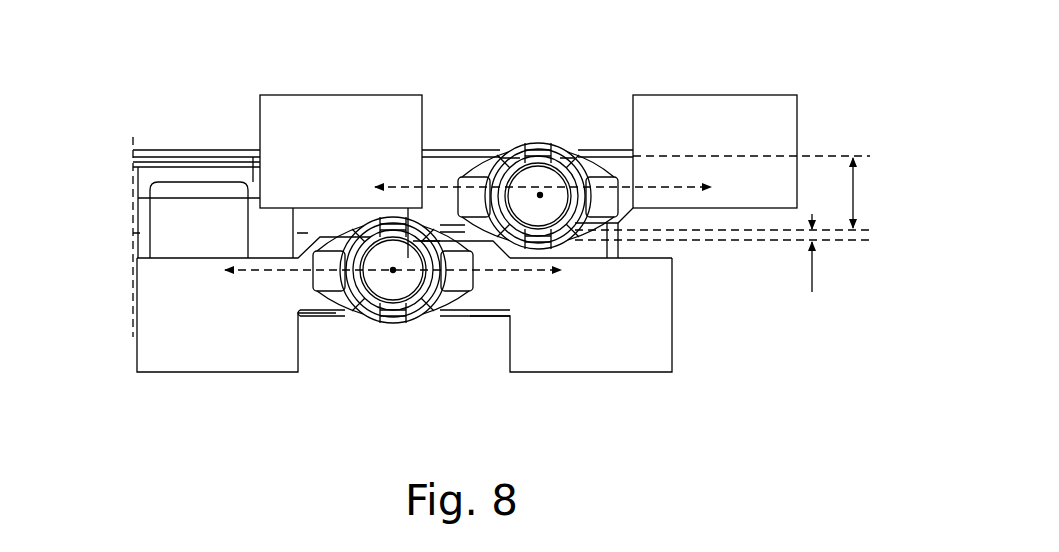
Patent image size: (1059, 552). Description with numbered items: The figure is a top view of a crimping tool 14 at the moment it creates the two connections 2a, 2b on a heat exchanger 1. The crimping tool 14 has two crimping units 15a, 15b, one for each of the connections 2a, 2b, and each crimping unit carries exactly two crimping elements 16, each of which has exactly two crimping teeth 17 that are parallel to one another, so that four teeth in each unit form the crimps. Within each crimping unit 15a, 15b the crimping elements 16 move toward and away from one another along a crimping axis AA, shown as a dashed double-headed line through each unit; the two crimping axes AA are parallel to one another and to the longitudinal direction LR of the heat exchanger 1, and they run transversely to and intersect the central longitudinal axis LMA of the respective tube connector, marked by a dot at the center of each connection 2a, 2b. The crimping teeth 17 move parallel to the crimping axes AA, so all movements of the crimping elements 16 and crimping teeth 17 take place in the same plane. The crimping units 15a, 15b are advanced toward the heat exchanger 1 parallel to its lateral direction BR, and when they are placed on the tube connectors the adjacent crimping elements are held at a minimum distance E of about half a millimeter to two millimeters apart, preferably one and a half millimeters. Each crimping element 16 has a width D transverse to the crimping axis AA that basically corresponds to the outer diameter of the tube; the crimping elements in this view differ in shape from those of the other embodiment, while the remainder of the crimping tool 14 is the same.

The heat exchanger 1 is at (198, 147).
The connection 2a is at (538, 133).
The connection 2b is at (393, 338).
The crimping tool 14 is at (764, 70).
The crimping unit 15a is at (461, 72).
The crimping unit 15b is at (369, 402).
The crimping element 16 is at (340, 113).
The crimping tooth 17 is at (472, 220).
The central longitudinal axis LMA is at (540, 195).
The crimping axis AA is at (388, 186).
The width D is at (754, 192).
The distance E is at (722, 255).
The longitudinal direction LR is at (128, 188).
The lateral direction BR is at (98, 199).